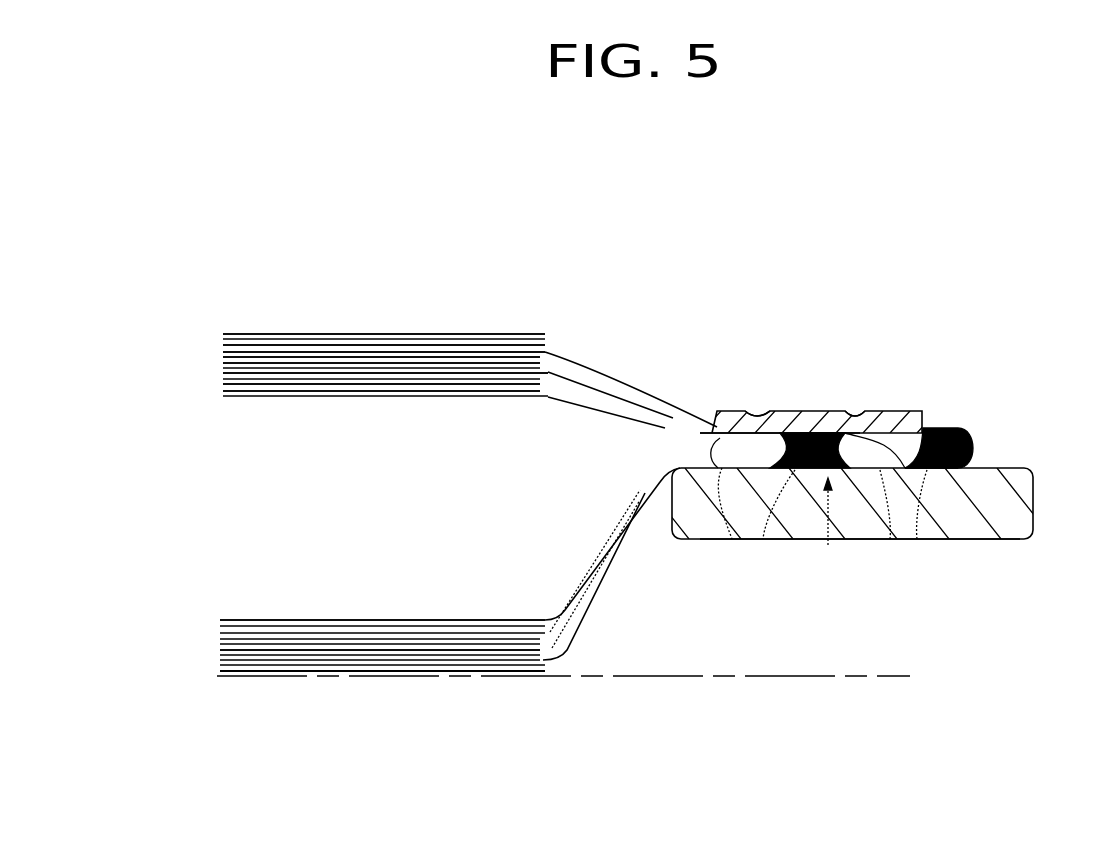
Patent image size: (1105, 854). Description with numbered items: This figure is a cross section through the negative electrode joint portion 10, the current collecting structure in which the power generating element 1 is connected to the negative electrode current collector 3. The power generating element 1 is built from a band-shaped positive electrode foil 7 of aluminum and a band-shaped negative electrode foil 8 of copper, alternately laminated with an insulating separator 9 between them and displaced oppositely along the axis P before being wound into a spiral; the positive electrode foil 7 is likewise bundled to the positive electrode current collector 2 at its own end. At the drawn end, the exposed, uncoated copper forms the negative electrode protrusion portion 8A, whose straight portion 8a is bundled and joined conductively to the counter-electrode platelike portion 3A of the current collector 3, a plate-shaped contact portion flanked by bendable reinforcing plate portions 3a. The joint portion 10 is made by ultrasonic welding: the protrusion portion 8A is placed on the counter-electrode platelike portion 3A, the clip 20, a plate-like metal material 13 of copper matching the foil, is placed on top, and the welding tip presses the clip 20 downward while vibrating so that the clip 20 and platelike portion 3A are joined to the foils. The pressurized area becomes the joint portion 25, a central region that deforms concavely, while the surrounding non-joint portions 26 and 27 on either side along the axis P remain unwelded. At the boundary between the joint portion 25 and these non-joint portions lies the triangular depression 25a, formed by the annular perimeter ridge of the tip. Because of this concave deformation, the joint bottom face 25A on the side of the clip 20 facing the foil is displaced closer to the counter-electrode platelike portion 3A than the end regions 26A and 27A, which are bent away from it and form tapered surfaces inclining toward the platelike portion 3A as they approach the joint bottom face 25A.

The power generating element 1 is at (278, 334).
The positive electrode foil 7 is at (250, 333).
The negative electrode foil 8 is at (323, 373).
The negative electrode protrusion portion 8A is at (632, 473).
The straight portion 8a is at (604, 410).
The separator 9 is at (433, 363).
The positive electrode current collector 2 is at (971, 540).
The negative electrode current collector 3 is at (843, 503).
The counter-electrode platelike portion 3A is at (857, 571).
The reinforcing plate portion 3a is at (878, 540).
The joint portion 10 is at (828, 545).
The metal material 13 is at (830, 411).
The clip 20 is at (830, 344).
The joint portion 25 is at (778, 413).
The triangular depression 25a is at (747, 411).
The joint bottom face 25A is at (763, 540).
The non-joint portion 26 is at (716, 412).
The end region 26A is at (730, 540).
The non-joint portion 27 is at (900, 415).
The end region 27A is at (923, 540).
The axis P is at (684, 678).